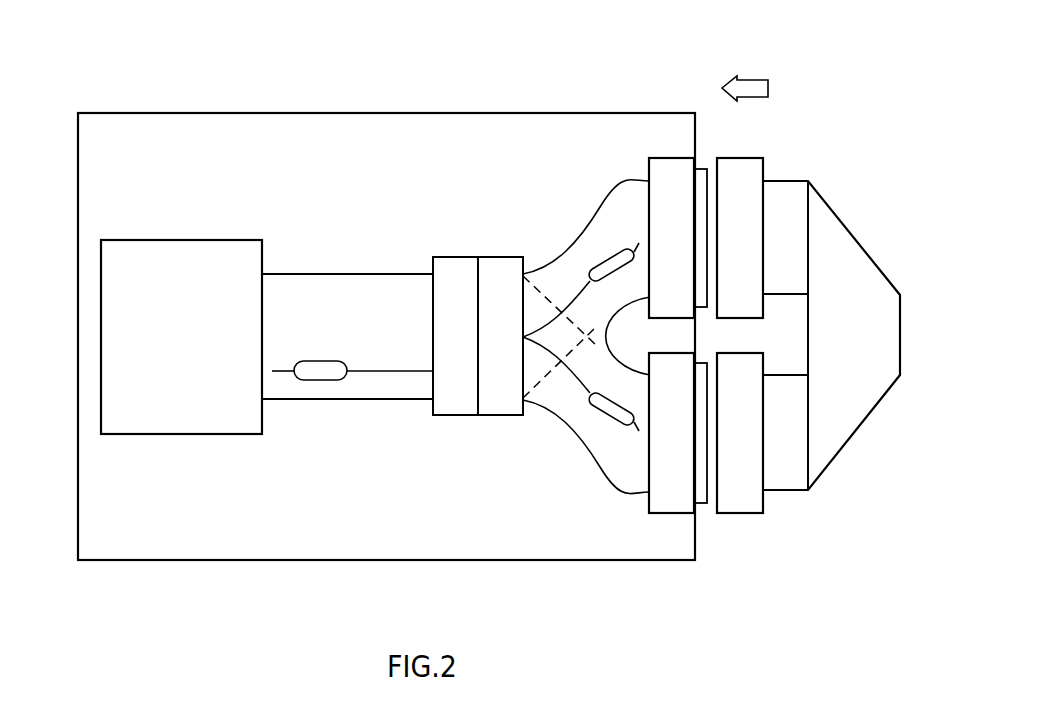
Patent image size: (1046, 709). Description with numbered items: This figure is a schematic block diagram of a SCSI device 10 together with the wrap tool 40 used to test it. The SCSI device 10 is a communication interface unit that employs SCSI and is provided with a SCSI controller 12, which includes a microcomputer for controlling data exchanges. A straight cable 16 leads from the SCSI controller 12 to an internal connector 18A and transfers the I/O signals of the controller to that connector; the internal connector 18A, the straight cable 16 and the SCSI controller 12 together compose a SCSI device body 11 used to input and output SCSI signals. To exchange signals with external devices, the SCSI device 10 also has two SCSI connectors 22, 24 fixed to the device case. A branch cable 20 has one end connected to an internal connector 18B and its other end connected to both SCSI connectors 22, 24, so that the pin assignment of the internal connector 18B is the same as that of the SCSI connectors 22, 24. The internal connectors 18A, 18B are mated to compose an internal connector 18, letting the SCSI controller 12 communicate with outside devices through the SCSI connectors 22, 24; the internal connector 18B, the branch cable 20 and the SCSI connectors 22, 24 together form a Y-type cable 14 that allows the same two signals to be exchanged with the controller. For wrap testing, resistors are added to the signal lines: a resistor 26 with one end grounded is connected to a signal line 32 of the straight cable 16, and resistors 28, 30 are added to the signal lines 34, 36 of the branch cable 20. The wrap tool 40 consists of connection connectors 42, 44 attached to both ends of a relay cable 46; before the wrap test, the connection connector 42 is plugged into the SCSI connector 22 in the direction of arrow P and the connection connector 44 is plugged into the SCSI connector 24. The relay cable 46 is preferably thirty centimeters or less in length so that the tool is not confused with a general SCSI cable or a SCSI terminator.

The SCSI device 10 is at (370, 113).
The SCSI device body 11 is at (312, 450).
The SCSI controller 12 is at (177, 240).
The Y-type cable 14 is at (515, 485).
The straight cable 16 is at (353, 274).
The internal connector 18 is at (477, 287).
The internal connector 18A is at (452, 257).
The internal connector 18B is at (500, 257).
The branch cable 20 is at (580, 238).
The SCSI connector 22 is at (667, 158).
The SCSI connector 24 is at (668, 513).
The resistor 26 is at (325, 380).
The resistor 28 is at (615, 250).
The resistor 30 is at (601, 466).
The signal line 32 is at (380, 370).
The signal line 34 is at (602, 322).
The signal line 36 is at (558, 403).
The wrap tool 40 is at (808, 297).
The connection connector 42 is at (765, 168).
The connection connector 44 is at (750, 515).
The relay cable 46 is at (856, 240).
The arrow P is at (757, 78).